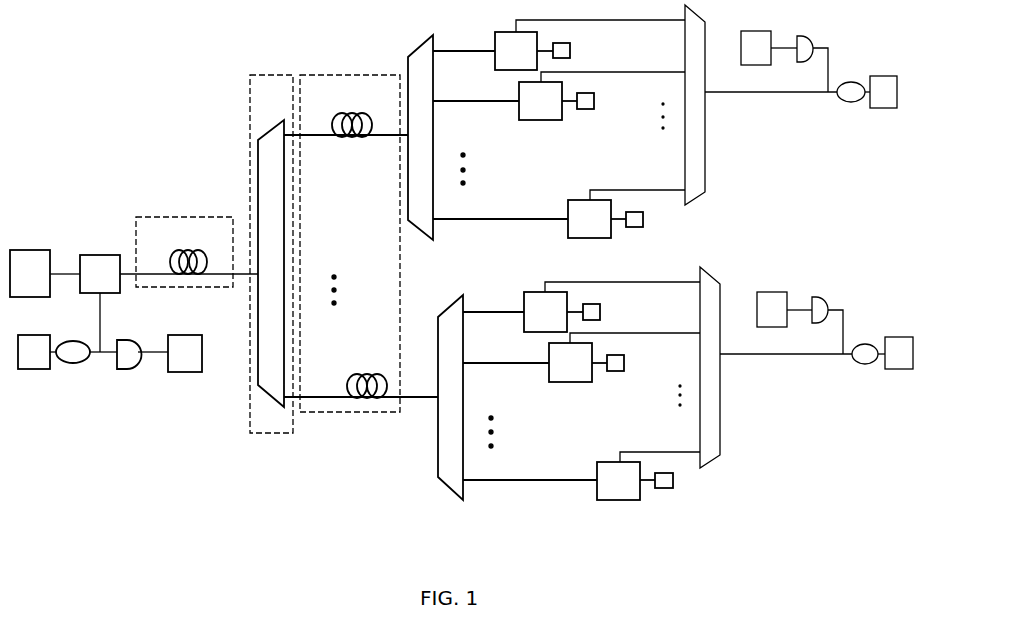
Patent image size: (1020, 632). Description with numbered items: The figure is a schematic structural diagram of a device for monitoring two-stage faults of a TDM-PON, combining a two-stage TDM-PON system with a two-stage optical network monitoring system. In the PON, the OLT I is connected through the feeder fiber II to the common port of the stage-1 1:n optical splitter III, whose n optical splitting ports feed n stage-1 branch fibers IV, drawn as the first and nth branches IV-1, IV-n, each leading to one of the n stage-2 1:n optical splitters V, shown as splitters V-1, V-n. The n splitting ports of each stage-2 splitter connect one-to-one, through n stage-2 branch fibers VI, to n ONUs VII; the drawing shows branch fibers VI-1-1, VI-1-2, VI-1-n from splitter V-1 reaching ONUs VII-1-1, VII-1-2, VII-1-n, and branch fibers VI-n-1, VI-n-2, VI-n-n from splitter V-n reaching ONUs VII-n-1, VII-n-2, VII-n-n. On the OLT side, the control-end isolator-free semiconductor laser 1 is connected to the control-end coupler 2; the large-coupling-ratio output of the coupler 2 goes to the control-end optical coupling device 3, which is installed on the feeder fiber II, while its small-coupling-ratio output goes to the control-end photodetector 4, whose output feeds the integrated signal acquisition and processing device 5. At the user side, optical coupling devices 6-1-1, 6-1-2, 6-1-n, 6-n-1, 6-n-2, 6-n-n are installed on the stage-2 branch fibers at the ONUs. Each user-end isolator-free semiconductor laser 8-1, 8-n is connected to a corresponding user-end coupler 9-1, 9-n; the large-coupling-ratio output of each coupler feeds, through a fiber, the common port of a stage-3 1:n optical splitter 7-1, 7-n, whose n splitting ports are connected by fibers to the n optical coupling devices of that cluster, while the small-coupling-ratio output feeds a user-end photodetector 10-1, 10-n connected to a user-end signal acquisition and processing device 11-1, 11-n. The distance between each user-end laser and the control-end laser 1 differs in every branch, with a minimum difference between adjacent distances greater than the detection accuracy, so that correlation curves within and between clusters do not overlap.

The OLT I is at (30, 273).
The control-end isolator-free semiconductor laser 1 is at (34, 352).
The control-end coupler 2 is at (73, 352).
The control-end optical coupling device 3 is at (100, 274).
The control-end photodetector 4 is at (129, 354).
The integrated signal acquisition and processing device 5 is at (185, 353).
The feeder fiber II is at (184, 252).
The stage-1 1:n optical splitter III is at (271, 254).
The stage-1 branch fiber IV is at (350, 243).
The stage-1 branch fiber IV-1 is at (346, 125).
The stage-1 branch fiber IV-n is at (361, 386).
The stage-2 1:n optical splitter V is at (435, 257).
The stage-2 1:n optical splitter V-1 is at (420, 137).
The stage-2 1:n optical splitter V-n is at (450, 397).
The stage-2 branch fiber VI is at (515, 243).
The stage-2 branch fiber VI-1-1 is at (464, 44).
The stage-2 branch fiber VI-1-2 is at (476, 94).
The stage-2 branch fiber VI-1-n is at (500, 212).
The stage-2 branch fiber VI-n-1 is at (493, 305).
The stage-2 branch fiber VI-n-2 is at (506, 356).
The stage-2 branch fiber VI-n-n is at (530, 473).
The optical coupling device 6-1-1 is at (516, 51).
The optical coupling device 6-1-2 is at (540, 101).
The optical coupling device 6-1-n is at (589, 219).
The optical coupling device 6-n-1 is at (545, 312).
The optical coupling device 6-n-2 is at (570, 362).
The optical coupling device 6-n-n is at (618, 481).
The ONU VII is at (622, 258).
The ONU VII-1-1 is at (570, 50).
The ONU VII-1-2 is at (595, 101).
The ONU VII-1-n is at (644, 219).
The ONU VII-n-1 is at (600, 312).
The ONU VII-n-2 is at (625, 363).
The ONU VII-n-n is at (674, 480).
The stage-3 1:n optical splitter 7-1 is at (695, 105).
The stage-3 1:n optical splitter 7-n is at (710, 367).
The user-end isolator-free semiconductor laser 8-1 is at (883, 92).
The user-end isolator-free semiconductor laser 8-n is at (899, 353).
The user-end coupler 9-1 is at (851, 92).
The user-end coupler 9-n is at (865, 354).
The user-end photodetector 10-1 is at (805, 49).
The user-end photodetector 10-n is at (820, 310).
The user-end signal acquisition and processing device 11-1 is at (756, 48).
The user-end signal acquisition and processing device 11-n is at (772, 309).